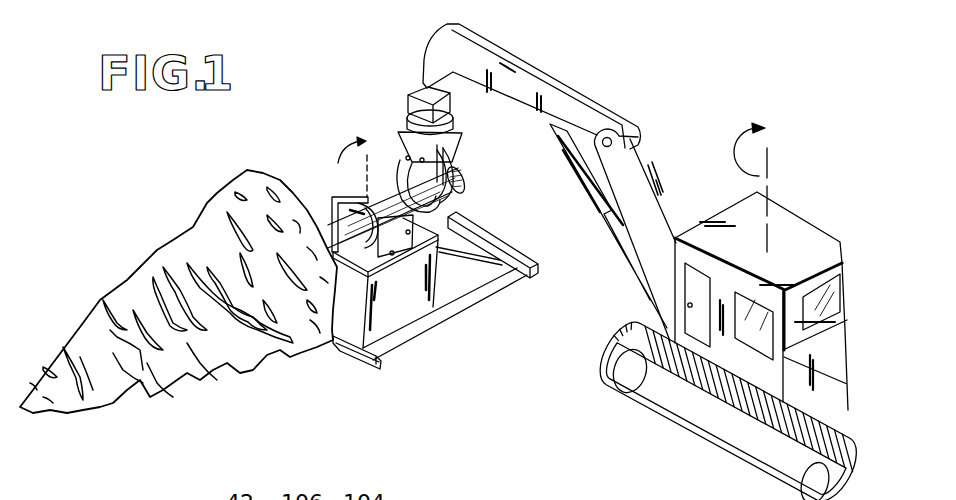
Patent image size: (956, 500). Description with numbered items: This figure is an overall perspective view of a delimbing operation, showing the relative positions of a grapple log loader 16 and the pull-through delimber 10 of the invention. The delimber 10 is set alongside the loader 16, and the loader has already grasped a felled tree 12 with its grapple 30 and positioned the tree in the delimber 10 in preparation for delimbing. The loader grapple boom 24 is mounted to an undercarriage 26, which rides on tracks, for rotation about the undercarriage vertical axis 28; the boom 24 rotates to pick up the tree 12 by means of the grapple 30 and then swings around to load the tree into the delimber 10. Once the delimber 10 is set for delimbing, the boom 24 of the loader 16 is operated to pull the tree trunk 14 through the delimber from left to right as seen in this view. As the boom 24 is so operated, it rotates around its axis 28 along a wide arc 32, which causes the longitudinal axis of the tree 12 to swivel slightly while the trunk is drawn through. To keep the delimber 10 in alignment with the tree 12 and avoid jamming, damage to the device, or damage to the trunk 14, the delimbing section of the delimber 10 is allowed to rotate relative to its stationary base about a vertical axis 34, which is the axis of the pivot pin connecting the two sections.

The delimber 10 is at (428, 333).
The tree 12 is at (208, 200).
The tree trunk 14 is at (463, 176).
The grapple log loader 16 is at (639, 262).
The grapple boom 24 is at (653, 183).
The undercarriage 26 is at (707, 438).
The undercarriage vertical axis 28 is at (767, 182).
The grapple 30 is at (407, 157).
The wide arc 32 is at (517, 46).
The vertical axis 34 is at (366, 188).